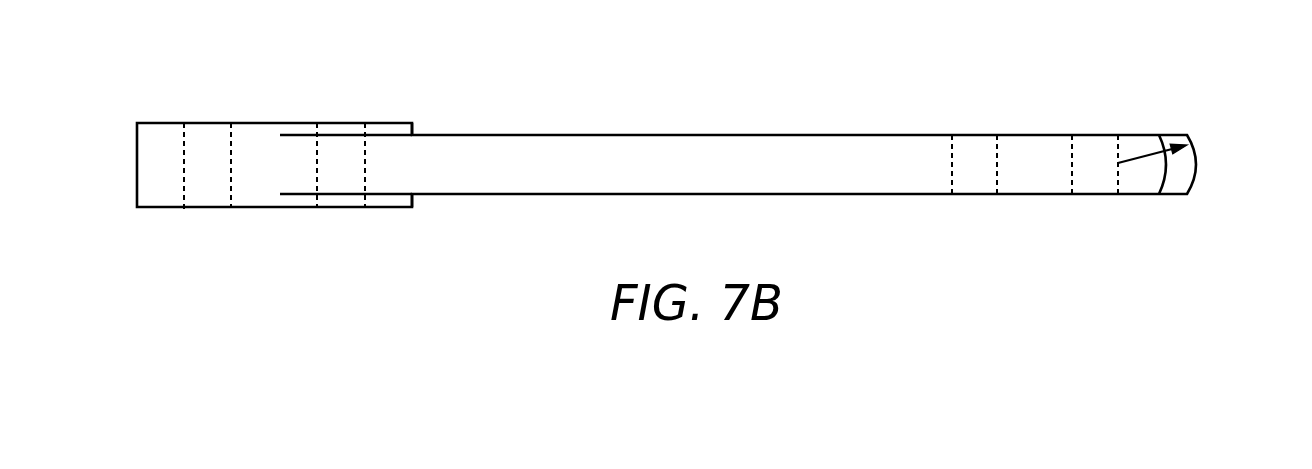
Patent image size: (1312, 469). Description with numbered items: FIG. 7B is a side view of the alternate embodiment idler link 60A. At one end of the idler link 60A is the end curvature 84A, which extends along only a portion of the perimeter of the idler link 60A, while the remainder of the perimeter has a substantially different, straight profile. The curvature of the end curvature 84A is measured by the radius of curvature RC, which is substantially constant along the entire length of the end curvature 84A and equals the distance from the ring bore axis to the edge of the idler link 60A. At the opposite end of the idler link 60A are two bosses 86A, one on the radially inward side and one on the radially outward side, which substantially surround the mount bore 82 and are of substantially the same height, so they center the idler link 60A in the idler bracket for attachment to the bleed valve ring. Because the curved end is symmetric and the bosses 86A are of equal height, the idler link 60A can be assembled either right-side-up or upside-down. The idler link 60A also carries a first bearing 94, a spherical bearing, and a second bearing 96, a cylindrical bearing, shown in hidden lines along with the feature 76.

The idler link 60A is at (832, 84).
The mount bore 82 is at (232, 137).
The second bearing 96 is at (337, 142).
The boss 86A is at (413, 123).
The first bearing 94 is at (980, 160).
The distal band 76 is at (1072, 153).
The end curvature 84A is at (1190, 143).
The radius of curvature RC is at (1152, 165).